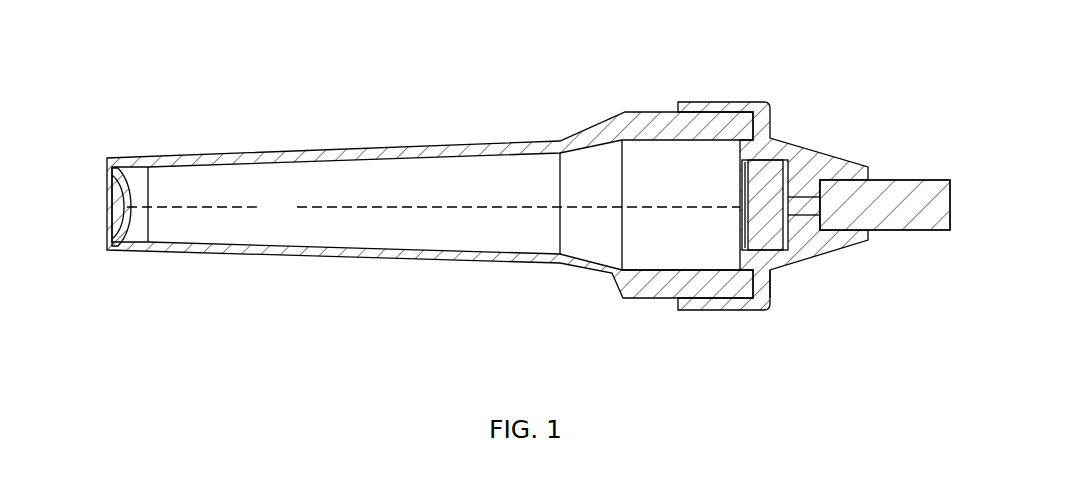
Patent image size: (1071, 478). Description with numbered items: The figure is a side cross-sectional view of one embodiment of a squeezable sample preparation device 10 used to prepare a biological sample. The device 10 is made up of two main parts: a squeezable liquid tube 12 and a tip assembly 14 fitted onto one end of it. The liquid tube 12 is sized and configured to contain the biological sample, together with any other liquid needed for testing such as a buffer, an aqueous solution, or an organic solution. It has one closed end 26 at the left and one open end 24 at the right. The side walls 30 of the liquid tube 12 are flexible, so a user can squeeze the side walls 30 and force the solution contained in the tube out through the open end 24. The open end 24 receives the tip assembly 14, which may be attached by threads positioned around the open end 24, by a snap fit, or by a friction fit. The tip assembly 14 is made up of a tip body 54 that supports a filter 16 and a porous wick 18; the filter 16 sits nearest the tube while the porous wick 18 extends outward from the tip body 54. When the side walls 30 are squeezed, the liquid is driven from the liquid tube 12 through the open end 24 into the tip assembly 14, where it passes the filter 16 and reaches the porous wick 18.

The squeezable device 10 is at (642, 80).
The squeezable liquid tube 12 is at (441, 176).
The tip assembly 14 is at (790, 104).
The filter 16 is at (766, 205).
The porous wick 18 is at (912, 197).
The open end 24 is at (745, 232).
The closed end 26 is at (120, 189).
The side walls 30 is at (292, 203).
The tip body 54 is at (778, 270).